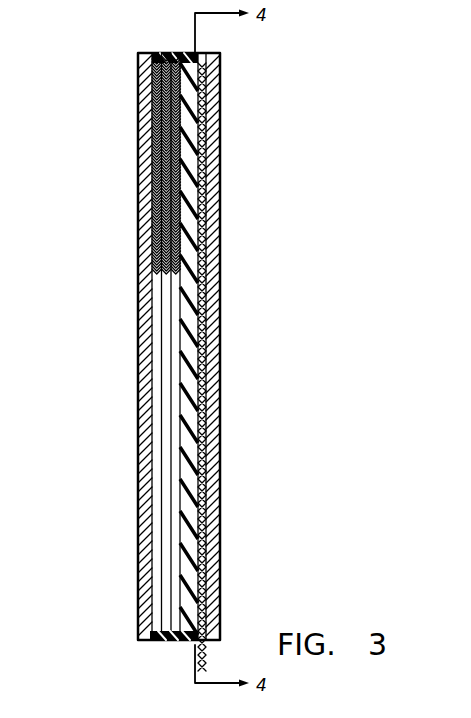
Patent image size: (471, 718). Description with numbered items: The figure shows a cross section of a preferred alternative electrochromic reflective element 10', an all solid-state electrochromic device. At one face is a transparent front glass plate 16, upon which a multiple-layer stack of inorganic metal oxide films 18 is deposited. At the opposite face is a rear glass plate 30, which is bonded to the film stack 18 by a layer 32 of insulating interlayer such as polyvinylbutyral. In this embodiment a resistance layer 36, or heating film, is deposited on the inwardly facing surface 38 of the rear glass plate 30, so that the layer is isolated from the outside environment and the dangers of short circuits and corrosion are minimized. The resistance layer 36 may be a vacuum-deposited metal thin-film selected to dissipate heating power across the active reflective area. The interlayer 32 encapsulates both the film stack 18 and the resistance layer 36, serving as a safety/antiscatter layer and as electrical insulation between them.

The electrochromic reflective element 10' is at (135, 323).
The transparent front glass plate 16 is at (137, 458).
The stack of inorganic metal oxide films 18 is at (165, 651).
The rear glass plate 30 is at (220, 237).
The insulating interlayer 32 is at (197, 514).
The resistance layer 36 is at (200, 322).
The inwardly facing surface 38 is at (202, 283).